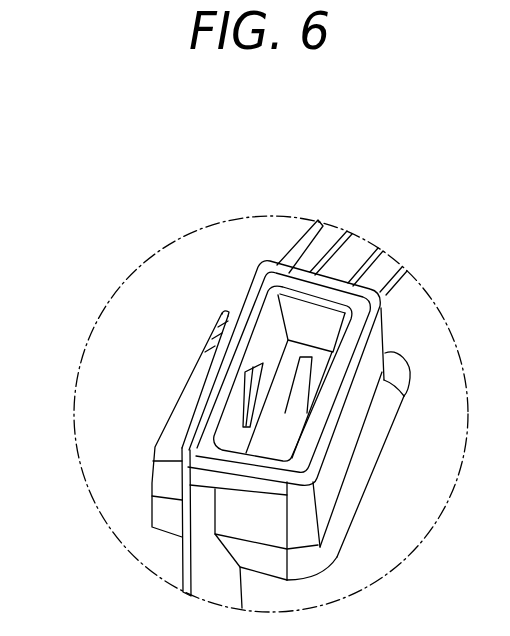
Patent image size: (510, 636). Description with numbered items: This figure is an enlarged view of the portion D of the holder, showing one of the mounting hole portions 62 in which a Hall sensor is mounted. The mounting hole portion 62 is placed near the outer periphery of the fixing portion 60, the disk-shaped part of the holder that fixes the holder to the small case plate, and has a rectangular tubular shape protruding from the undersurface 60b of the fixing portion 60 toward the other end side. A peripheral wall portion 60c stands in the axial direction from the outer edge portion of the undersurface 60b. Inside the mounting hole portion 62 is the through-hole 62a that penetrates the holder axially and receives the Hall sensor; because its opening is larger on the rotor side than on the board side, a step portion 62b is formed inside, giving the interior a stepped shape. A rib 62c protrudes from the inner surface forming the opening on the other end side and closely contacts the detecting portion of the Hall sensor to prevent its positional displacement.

The fixing portion 60 is at (303, 227).
The undersurface 60b is at (432, 501).
The peripheral wall portion 60c is at (181, 575).
The mounting hole portion 62 is at (230, 272).
The through-hole 62a is at (313, 312).
The step portion 62b is at (287, 362).
The rib 62c is at (243, 393).
The portion D is at (74, 419).